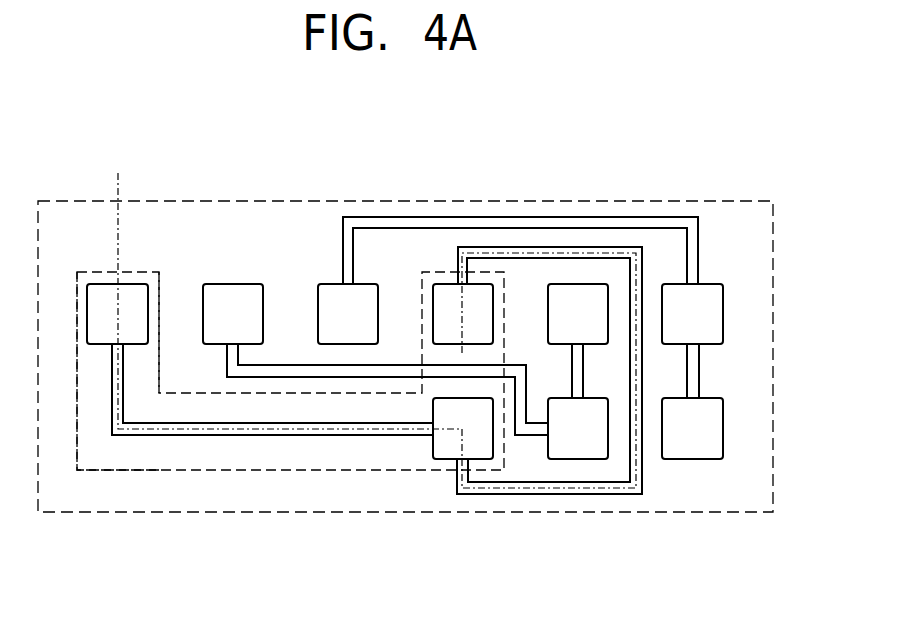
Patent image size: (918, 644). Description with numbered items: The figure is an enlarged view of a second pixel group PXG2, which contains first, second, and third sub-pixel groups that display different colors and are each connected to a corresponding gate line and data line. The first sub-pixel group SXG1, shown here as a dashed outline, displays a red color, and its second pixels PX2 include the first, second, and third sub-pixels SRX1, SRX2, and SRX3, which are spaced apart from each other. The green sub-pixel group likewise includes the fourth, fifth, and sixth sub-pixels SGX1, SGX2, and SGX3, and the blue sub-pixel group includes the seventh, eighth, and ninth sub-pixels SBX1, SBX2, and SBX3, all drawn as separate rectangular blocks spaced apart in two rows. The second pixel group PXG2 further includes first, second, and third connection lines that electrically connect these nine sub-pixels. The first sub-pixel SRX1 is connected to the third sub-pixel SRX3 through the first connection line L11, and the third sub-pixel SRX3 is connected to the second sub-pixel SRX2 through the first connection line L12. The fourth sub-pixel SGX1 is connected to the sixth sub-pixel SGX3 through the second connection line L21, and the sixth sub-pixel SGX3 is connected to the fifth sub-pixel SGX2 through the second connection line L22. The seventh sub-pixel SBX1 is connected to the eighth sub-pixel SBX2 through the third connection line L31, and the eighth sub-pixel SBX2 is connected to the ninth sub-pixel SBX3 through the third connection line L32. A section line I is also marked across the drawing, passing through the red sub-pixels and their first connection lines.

The second pixel group PXG2 is at (726, 201).
The second pixel PX2 is at (137, 284).
The first sub-pixel group SXG1 is at (108, 470).
The first sub-pixel SRX1 is at (117, 314).
The fourth sub-pixel SGX1 is at (233, 314).
The seventh sub-pixel SBX1 is at (348, 314).
The second sub-pixel SRX2 is at (463, 314).
The fifth sub-pixel SGX2 is at (578, 314).
The eighth sub-pixel SBX2 is at (692, 314).
The third sub-pixel SRX3 is at (463, 428).
The sixth sub-pixel SGX3 is at (578, 428).
The ninth sub-pixel SBX3 is at (692, 428).
The first connection line L11 is at (187, 435).
The second connection line L21 is at (290, 377).
The third connection line L31 is at (436, 217).
The first connection line L12 is at (548, 495).
The second connection line L22 is at (583, 370).
The third connection line L32 is at (699, 371).
The section line I-I' I is at (118, 173).